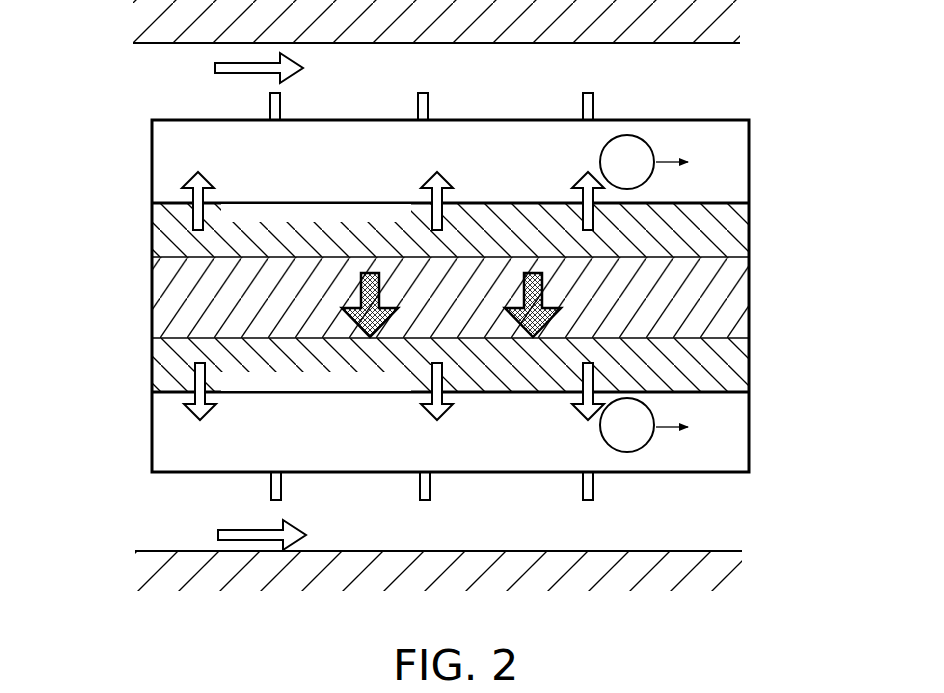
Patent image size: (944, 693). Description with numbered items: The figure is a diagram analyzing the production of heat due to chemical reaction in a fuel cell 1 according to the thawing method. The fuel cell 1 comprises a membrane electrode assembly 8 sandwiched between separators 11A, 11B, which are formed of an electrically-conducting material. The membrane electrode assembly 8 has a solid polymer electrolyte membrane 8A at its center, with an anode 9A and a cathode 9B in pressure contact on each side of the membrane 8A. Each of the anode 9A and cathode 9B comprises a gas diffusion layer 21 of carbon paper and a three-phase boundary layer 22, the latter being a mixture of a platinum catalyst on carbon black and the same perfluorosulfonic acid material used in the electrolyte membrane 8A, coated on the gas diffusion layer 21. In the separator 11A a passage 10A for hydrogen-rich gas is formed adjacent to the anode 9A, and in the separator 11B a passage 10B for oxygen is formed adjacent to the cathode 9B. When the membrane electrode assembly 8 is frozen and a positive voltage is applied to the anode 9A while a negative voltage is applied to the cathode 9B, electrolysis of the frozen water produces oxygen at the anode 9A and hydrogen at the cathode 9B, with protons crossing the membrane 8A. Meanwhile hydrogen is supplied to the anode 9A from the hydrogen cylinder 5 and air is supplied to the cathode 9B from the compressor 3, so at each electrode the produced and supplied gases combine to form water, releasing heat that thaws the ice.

The fuel cell 1 is at (60, 45).
The compressor 3 is at (180, 515).
The hydrogen cylinder 5 is at (185, 88).
The membrane electrode assembly 8 is at (476, 293).
The solid polymer electrolyte membrane 8A is at (735, 303).
The anode 9A is at (141, 122).
The cathode 9B is at (141, 338).
The passage for hydrogen-rich gas 10A is at (532, 90).
The passage for oxygen 10B is at (533, 533).
The separator 11A is at (712, 43).
The separator 11B is at (672, 551).
The gas diffusion layer 21 is at (735, 164).
The three-phase boundary layer 22 is at (735, 228).